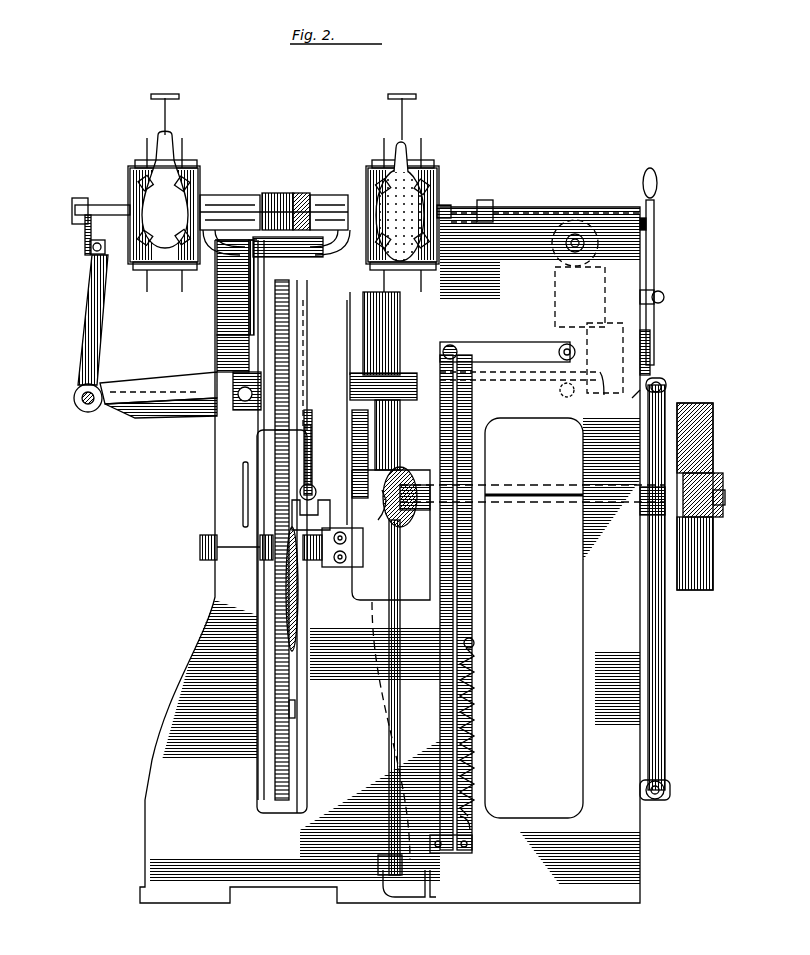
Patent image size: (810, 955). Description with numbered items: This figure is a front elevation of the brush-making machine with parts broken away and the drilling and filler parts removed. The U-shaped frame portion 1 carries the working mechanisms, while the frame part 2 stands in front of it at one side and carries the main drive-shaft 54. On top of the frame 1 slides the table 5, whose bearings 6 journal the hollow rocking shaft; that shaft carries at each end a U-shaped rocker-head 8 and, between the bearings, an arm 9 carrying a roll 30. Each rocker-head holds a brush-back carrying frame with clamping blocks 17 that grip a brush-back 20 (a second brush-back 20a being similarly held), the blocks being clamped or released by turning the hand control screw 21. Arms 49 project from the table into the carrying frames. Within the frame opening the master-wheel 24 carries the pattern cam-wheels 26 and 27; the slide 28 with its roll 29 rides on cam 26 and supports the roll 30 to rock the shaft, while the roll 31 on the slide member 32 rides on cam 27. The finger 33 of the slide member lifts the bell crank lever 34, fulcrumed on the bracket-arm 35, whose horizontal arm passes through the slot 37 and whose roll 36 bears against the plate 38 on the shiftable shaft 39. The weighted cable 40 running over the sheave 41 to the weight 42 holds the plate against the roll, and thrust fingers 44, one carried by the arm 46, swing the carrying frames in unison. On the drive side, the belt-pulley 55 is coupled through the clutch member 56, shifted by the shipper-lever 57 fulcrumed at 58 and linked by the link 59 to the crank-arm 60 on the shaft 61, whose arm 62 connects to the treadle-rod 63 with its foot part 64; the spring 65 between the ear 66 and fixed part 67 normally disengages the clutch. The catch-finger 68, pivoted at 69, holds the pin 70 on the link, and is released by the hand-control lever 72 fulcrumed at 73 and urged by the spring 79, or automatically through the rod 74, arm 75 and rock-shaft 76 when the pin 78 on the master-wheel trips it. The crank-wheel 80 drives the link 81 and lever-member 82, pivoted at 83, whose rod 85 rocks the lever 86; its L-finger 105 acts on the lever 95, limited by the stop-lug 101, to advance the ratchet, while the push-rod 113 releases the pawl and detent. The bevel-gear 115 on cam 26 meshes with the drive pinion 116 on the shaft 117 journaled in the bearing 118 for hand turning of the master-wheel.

The machine frame portion 1 is at (228, 600).
The frame part 2 is at (617, 660).
The table 5 is at (290, 250).
The bearings 6 is at (240, 200).
The rocker-head or yoke member 8 is at (190, 162).
The arm 9 is at (282, 197).
The brush-back clamping blocks 17 is at (198, 190).
The brush-back 20 is at (164, 211).
The last 20a is at (418, 200).
The hand control screw 21 is at (167, 128).
The master-wheel 24 is at (270, 776).
The pattern cam-wheel 26 is at (290, 700).
The pattern cam-wheel 27 is at (272, 720).
The slide 28 is at (305, 325).
The stud or roll 29 is at (300, 348).
The roll 30 is at (302, 197).
The roll or stud 31 is at (217, 352).
The slide member 32 is at (225, 316).
The finger 33 is at (240, 405).
The bell crank lever 34 is at (85, 350).
The bracket-arm 35 is at (150, 410).
The anti-friction roll 36 is at (95, 255).
The slot or opening 37 is at (185, 415).
The plate 38 is at (80, 225).
The axially shiftable shaft 39 is at (110, 205).
The weighted cable 40 is at (540, 210).
The sheave 41 is at (553, 246).
The weight 42 is at (612, 325).
The thrust-rod or finger 44 is at (125, 205).
The arm 46 is at (485, 200).
The arm 49 is at (222, 252).
The main drive-shaft 54 is at (537, 500).
The belt-pulley 55 is at (700, 588).
The clutch member 56 is at (695, 405).
The shipper-lever 57 is at (667, 675).
The fulcrum 58 is at (666, 790).
The link 59 is at (662, 387).
The crank-arm 60 is at (562, 390).
The shaft 61 is at (565, 345).
The arm 62 is at (495, 370).
The treadle-rod 63 is at (470, 590).
The foot-pressure receiving part 64 is at (410, 875).
The coiled contractile spring 65 is at (470, 712).
The ear 66 is at (472, 822).
The fixed frame part 67 is at (473, 645).
The catch-finger 68 is at (604, 378).
The pivot 69 is at (652, 350).
The pin or lug 70 is at (632, 398).
The hand-control lever 72 is at (655, 262).
The fulcrum 73 is at (664, 297).
The rod 74 is at (522, 372).
The arm 75 is at (449, 344).
The rock-shaft 76 is at (415, 290).
The pin 78 is at (294, 718).
The spring 79 is at (656, 222).
The crank-wheel 80 is at (402, 470).
The link 81 is at (400, 525).
The lever-member 82 is at (389, 626).
The pivot 83 is at (378, 863).
The rod 85 is at (391, 535).
The lever 86 is at (400, 400).
The cross-arm or lever 95 is at (352, 440).
The stop-lug 101 is at (352, 422).
The L-finger 105 is at (384, 505).
The push-rod 113 is at (254, 510).
The bevel-gear 115 is at (298, 580).
The drive pinion 116 is at (330, 509).
The shaft 117 is at (312, 462).
The bearing 118 is at (316, 490).